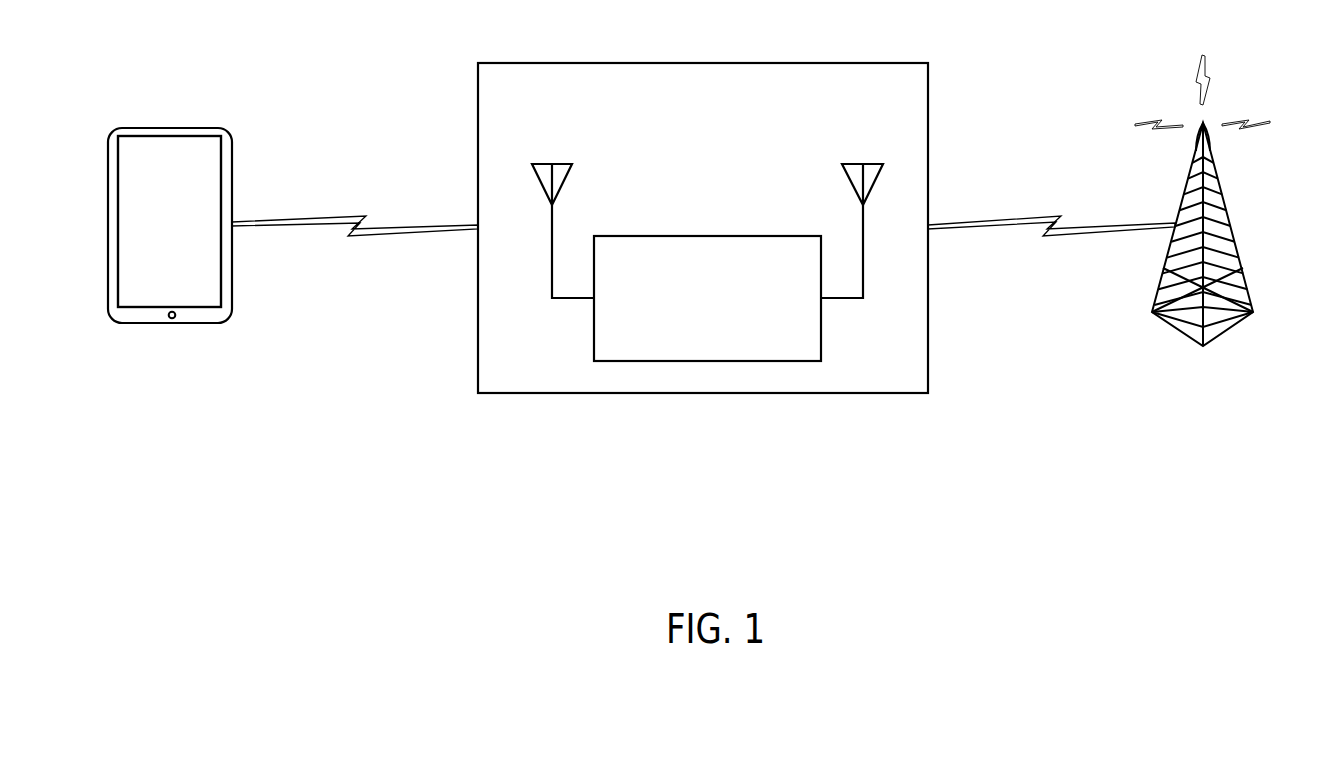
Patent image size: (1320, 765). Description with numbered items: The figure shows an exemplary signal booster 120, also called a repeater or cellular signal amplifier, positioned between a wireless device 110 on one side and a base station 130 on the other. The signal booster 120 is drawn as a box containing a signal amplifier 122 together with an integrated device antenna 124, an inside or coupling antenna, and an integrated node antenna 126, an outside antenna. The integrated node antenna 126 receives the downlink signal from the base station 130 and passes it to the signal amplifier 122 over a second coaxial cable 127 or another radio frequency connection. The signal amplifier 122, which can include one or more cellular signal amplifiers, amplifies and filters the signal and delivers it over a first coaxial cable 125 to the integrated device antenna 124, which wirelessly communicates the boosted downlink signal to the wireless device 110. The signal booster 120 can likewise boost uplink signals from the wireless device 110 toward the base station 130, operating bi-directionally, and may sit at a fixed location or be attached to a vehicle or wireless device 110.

The wireless device 110 is at (167, 128).
The signal booster 120 is at (820, 100).
The signal amplifier 122 is at (728, 324).
The integrated device antenna 124 is at (552, 171).
The first coaxial cable 125 is at (544, 251).
The integrated node antenna 126 is at (862, 171).
The second coaxial cable 127 is at (865, 251).
The base station 130 is at (1222, 183).